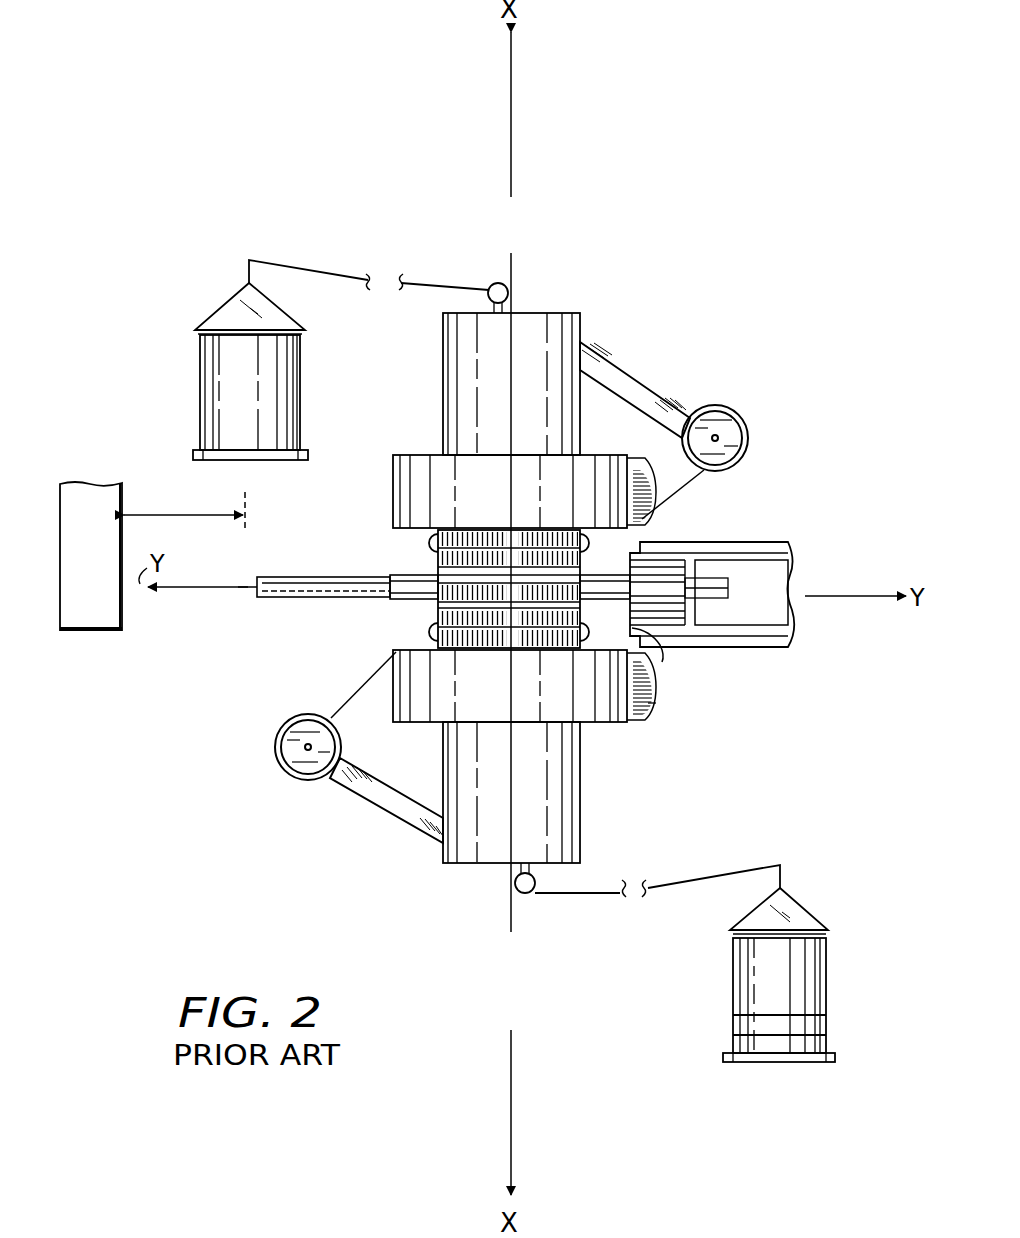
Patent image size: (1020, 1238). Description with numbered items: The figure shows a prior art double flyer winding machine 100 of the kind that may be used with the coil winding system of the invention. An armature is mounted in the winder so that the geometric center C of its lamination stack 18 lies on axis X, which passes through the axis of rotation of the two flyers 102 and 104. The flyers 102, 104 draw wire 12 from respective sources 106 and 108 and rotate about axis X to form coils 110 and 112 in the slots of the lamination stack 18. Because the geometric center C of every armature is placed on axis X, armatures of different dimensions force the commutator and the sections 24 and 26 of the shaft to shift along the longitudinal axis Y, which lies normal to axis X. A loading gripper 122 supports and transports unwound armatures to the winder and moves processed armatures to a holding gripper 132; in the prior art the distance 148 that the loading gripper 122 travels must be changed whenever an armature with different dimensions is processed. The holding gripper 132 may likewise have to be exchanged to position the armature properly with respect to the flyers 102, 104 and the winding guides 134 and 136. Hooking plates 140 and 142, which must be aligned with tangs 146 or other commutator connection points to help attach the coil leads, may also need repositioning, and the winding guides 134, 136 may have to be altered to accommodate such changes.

The winding machine 100 is at (660, 245).
The flyer 102 is at (618, 368).
The flyer 104 is at (388, 815).
The wire source 106 is at (200, 376).
The wire source 108 is at (828, 1018).
The coil 110 is at (430, 632).
The coil 112 is at (598, 548).
The wire 12 is at (708, 472).
The lamination stack 18 is at (436, 623).
The loading gripper 122 is at (60, 626).
The holding gripper 132 is at (778, 542).
The winding guide 134 is at (393, 490).
The winding guide 136 is at (604, 722).
The hooking plate 140 is at (655, 460).
The hooking plate 142 is at (656, 717).
The tang 146 is at (656, 632).
The travel distance 148 is at (166, 513).
The shaft section 24 is at (650, 703).
The shaft section 26 is at (730, 582).
The geometric center C is at (507, 585).